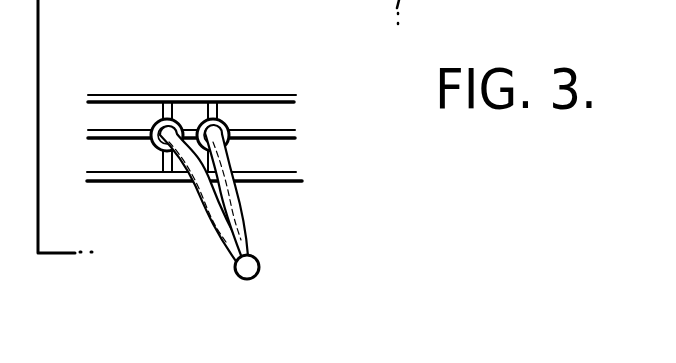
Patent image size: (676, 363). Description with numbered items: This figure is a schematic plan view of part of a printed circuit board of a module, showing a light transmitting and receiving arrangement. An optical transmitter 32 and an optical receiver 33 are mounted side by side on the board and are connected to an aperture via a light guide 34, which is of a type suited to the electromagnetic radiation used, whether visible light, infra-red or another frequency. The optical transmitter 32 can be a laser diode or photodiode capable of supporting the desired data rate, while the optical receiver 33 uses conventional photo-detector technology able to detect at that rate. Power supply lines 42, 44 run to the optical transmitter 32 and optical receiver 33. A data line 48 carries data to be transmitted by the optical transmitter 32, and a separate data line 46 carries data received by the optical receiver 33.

The optical transmitter 32 is at (172, 123).
The optical receiver 33 is at (224, 122).
The light guide 34 is at (238, 229).
The power supply line 42 is at (110, 95).
The power supply line 44 is at (137, 184).
The data line 46 is at (279, 138).
The data line 48 is at (127, 138).